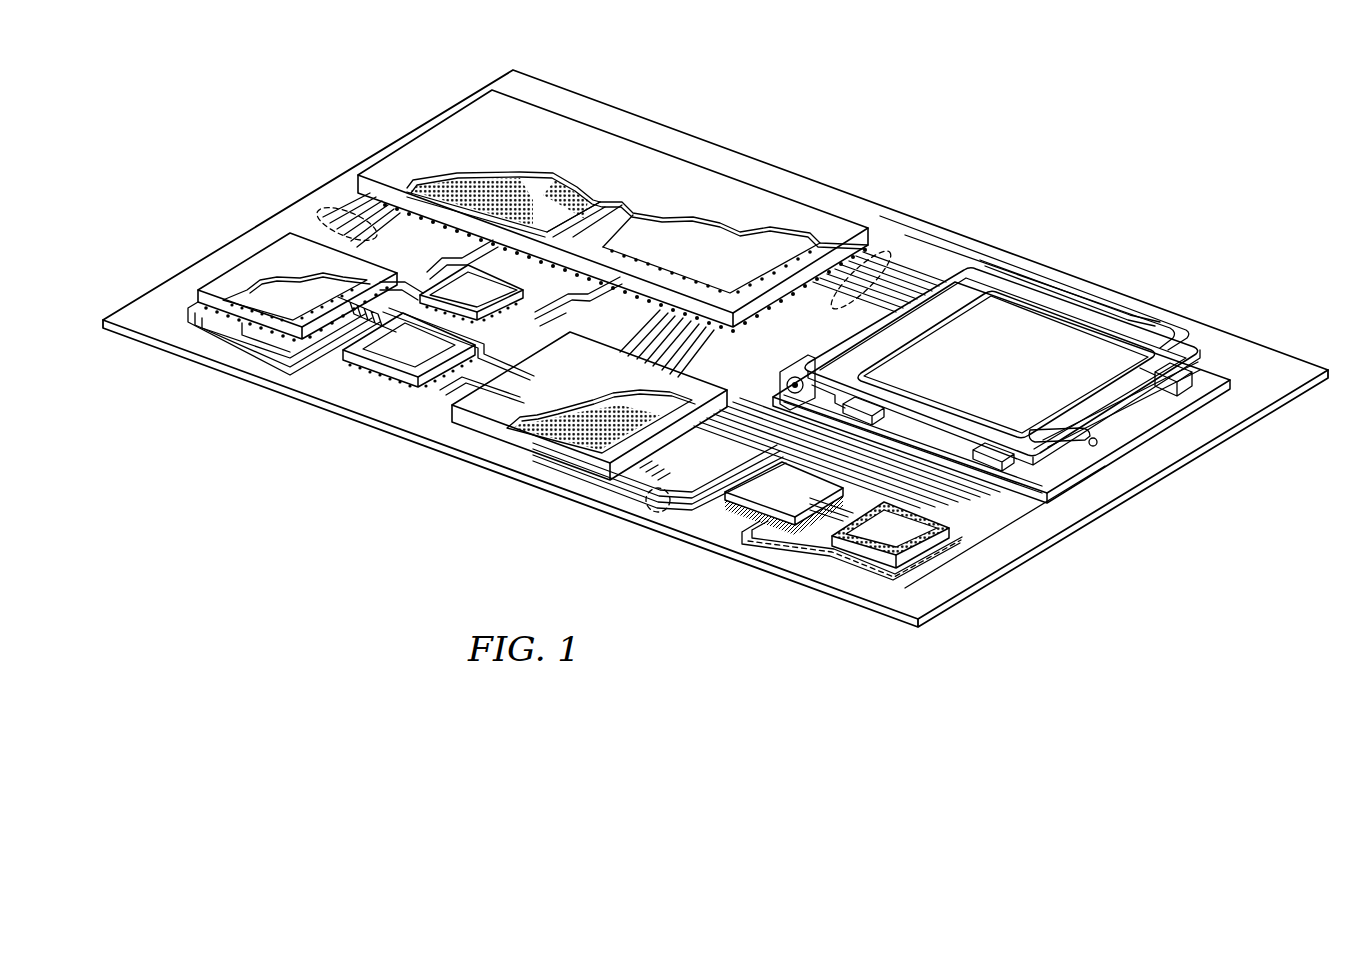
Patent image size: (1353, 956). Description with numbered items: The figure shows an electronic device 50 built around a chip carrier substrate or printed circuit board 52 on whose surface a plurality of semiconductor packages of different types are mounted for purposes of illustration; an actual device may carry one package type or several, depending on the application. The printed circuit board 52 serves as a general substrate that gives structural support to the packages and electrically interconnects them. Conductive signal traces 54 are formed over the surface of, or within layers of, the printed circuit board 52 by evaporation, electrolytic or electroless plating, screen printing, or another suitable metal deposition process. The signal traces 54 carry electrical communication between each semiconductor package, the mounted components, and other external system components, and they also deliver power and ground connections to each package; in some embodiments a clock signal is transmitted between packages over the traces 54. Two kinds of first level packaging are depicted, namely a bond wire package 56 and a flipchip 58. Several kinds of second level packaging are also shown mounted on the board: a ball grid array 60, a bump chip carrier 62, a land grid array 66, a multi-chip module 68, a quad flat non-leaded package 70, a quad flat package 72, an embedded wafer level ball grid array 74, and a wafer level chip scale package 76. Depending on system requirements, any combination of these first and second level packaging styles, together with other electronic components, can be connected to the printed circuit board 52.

The electronic device 50 is at (1132, 520).
The printed circuit board 52 is at (978, 588).
The conductive signal traces 54 is at (336, 210).
The bond wire package 56 is at (598, 411).
The flipchip 58 is at (293, 290).
The ball grid array 60 is at (214, 290).
The bump chip carrier 62 is at (552, 452).
The land grid array 66 is at (1040, 330).
The multi-chip module 68 is at (680, 183).
The quad flat non-leaded package 70 is at (875, 553).
The quad flat package 72 is at (753, 487).
The embedded wafer level ball grid array 74 is at (387, 360).
The wafer level chip scale package 76 is at (477, 289).